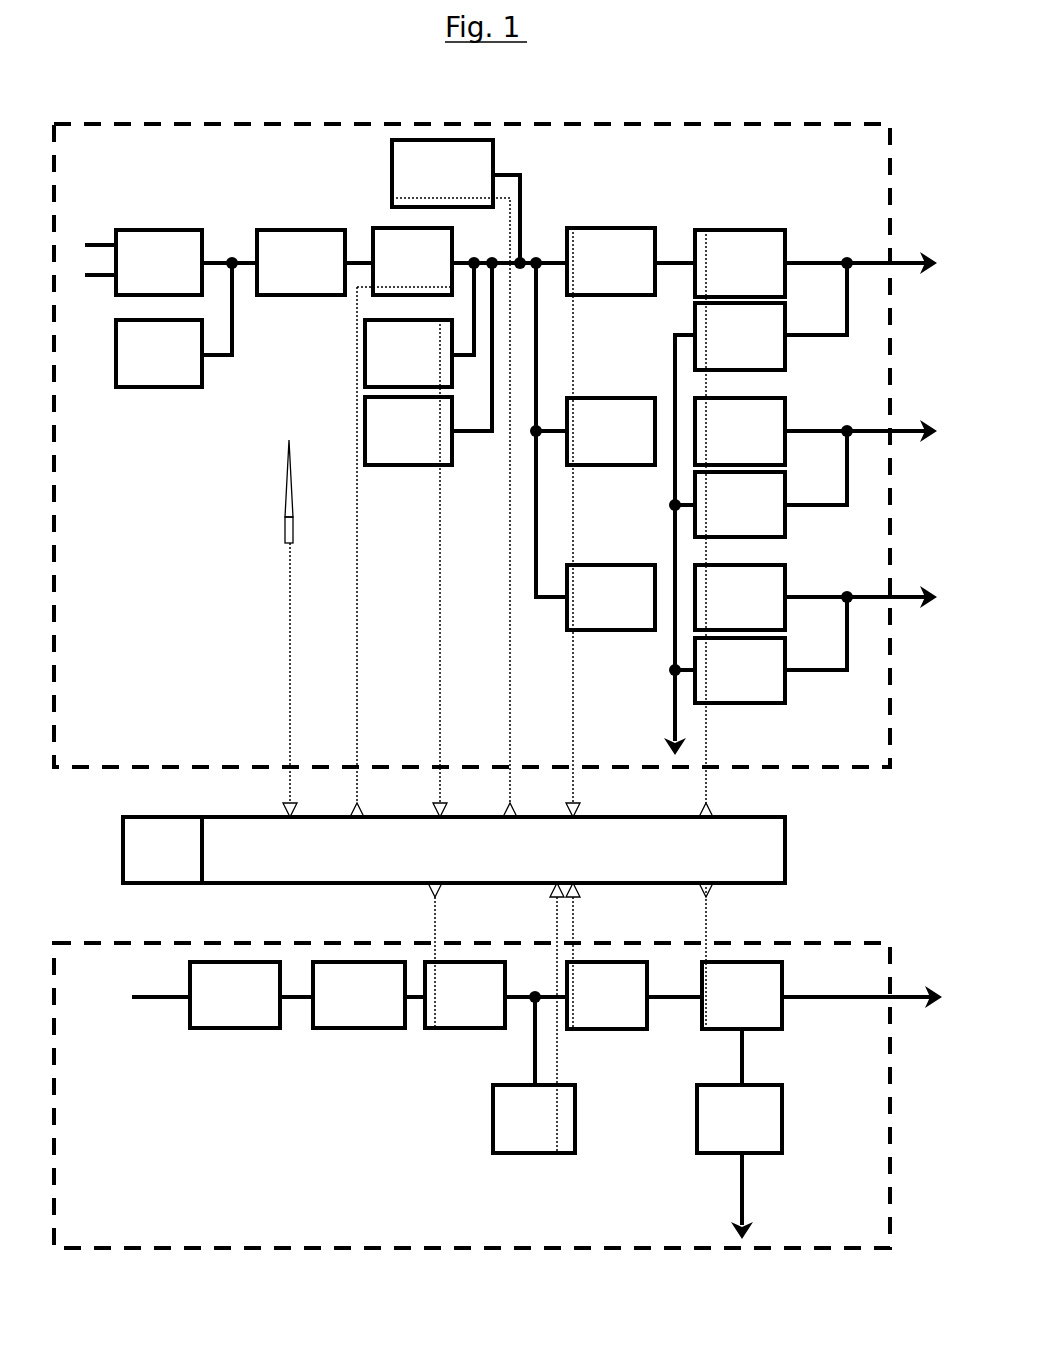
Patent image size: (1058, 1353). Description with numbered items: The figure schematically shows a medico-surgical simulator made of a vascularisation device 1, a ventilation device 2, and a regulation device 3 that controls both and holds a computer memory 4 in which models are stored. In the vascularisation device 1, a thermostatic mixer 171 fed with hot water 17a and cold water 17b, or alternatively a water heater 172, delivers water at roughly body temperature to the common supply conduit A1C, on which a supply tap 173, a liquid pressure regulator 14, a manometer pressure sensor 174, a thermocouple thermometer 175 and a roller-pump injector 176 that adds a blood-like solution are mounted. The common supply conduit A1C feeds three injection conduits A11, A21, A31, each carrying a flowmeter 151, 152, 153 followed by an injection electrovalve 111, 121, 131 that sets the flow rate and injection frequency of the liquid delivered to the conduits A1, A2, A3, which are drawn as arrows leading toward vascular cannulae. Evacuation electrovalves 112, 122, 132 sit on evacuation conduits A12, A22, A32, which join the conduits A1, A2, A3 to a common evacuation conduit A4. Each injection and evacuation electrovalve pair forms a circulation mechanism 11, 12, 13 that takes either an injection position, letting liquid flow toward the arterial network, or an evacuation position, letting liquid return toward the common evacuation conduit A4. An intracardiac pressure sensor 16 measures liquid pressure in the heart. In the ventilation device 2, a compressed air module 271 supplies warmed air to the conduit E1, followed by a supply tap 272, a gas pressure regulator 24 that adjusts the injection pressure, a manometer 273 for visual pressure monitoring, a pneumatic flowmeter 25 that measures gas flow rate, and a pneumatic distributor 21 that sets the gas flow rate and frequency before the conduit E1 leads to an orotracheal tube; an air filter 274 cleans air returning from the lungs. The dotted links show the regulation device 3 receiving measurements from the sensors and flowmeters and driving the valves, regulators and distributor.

The vascularisation device 1 is at (700, 124).
The ventilation device 2 is at (88, 943).
The regulation device 3 is at (493, 850).
The computer memory 4 is at (162, 850).
The circulation mechanism 11 is at (140, 553).
The circulation mechanism 12 is at (140, 627).
The circulation mechanism 13 is at (140, 688).
The liquid pressure regulator 14 is at (401, 522).
The intracardiac pressure sensor 16 is at (285, 520).
The hot water 17a is at (98, 245).
The cold water 17b is at (98, 280).
The pneumatic distributor 21 is at (740, 956).
The gas pressure regulator 24 is at (465, 955).
The pneumatic flowmeter 25 is at (606, 956).
The injection electrovalve 111 is at (740, 523).
The evacuation electrovalve 112 is at (740, 336).
The injection electrovalve 121 is at (740, 431).
The evacuation electrovalve 122 is at (740, 504).
The injection electrovalve 131 is at (740, 597).
The evacuation electrovalve 132 is at (740, 670).
The flowmeter 151 is at (610, 522).
The flowmeter 152 is at (611, 431).
The flowmeter 153 is at (611, 597).
The thermostatic mixer 171 is at (159, 262).
The water heater 172 is at (159, 353).
The supply tap 173 is at (301, 262).
The manometer pressure sensor 174 is at (428, 540).
The thermocouple thermometer 175 is at (419, 325).
The injector 176 is at (456, 478).
The compressed air module 271 is at (235, 995).
The supply tap 272 is at (359, 995).
The manometer 273 is at (534, 1018).
The air filter 274 is at (739, 1134).
The conduit A1 is at (897, 263).
The conduit A2 is at (897, 431).
The conduit A3 is at (897, 597).
The common evacuation conduit A4 is at (668, 716).
The injection conduit A11 is at (675, 263).
The evacuation conduit A12 is at (800, 337).
The injection conduit A21 is at (808, 431).
The evacuation conduit A22 is at (800, 507).
The injection conduit A31 is at (825, 580).
The evacuation conduit A32 is at (812, 672).
The common supply conduit A1C is at (500, 263).
The conduit E1 is at (901, 997).